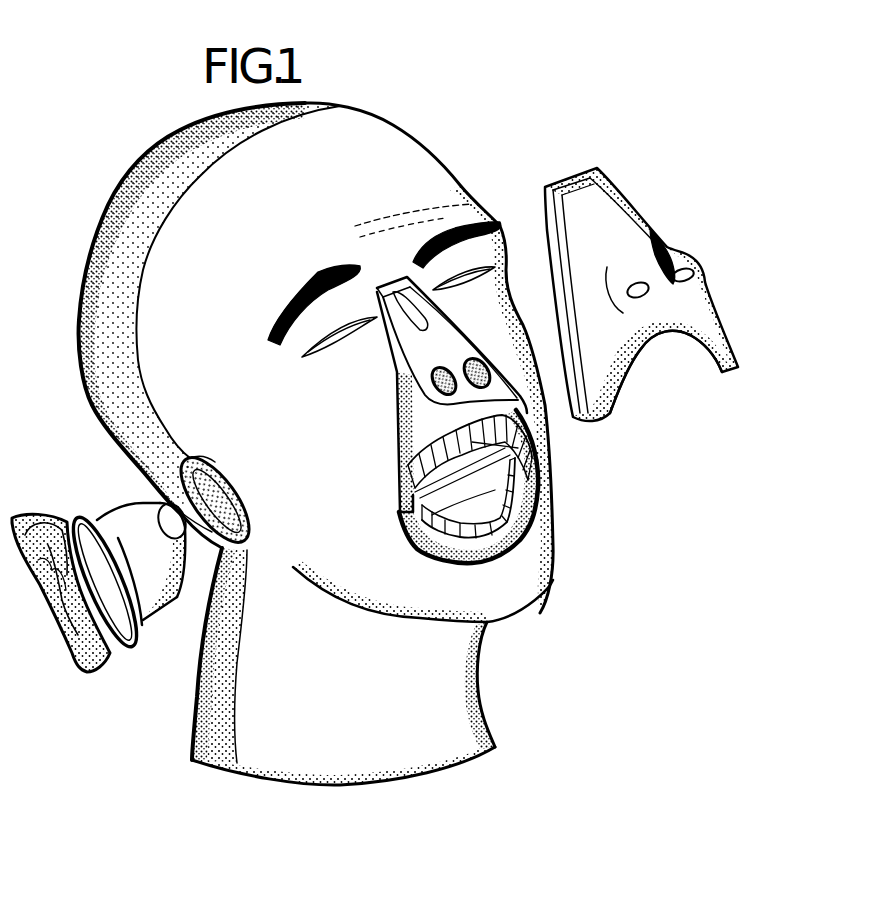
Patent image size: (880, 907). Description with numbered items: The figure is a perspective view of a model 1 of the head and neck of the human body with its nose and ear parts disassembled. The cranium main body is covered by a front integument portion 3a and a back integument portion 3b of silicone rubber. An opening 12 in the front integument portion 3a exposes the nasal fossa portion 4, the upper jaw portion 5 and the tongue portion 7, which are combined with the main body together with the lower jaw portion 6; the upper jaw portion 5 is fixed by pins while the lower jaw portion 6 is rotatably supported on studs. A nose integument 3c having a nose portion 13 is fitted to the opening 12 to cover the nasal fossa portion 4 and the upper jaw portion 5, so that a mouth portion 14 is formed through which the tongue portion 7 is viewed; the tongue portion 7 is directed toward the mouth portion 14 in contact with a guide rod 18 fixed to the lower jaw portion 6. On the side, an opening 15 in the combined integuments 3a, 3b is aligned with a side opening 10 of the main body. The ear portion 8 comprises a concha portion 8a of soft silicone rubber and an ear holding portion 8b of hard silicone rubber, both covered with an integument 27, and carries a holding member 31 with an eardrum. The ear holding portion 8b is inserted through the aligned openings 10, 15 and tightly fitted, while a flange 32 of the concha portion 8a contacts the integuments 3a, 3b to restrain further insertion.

The model of the head and neck of the human body 1 is at (482, 134).
The front integument portion 3a is at (428, 172).
The back integument portion 3b is at (148, 170).
The nose integument 3c is at (680, 305).
The nasal fossa portion 4 is at (453, 343).
The upper jaw portion 5 is at (490, 410).
The lower jaw portion 6 is at (517, 567).
The tongue portion 7 is at (500, 512).
The ear portion 8 is at (57, 641).
The concha portion 8a is at (79, 674).
The ear holding portion 8b is at (103, 507).
The side opening 10 is at (231, 502).
The opening 12 is at (500, 400).
The nose portion 13 is at (658, 237).
The mouth portion 14 is at (445, 548).
The opening 15 is at (222, 533).
The guide rod 18 is at (492, 492).
The integument 27 is at (155, 592).
The holding member 31 is at (163, 506).
The flange 32 is at (128, 642).